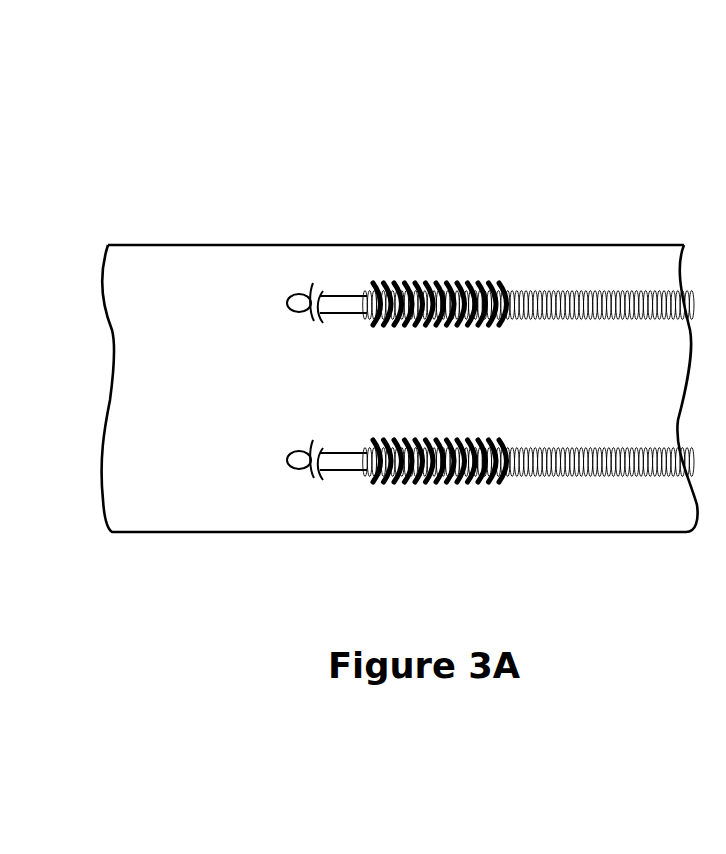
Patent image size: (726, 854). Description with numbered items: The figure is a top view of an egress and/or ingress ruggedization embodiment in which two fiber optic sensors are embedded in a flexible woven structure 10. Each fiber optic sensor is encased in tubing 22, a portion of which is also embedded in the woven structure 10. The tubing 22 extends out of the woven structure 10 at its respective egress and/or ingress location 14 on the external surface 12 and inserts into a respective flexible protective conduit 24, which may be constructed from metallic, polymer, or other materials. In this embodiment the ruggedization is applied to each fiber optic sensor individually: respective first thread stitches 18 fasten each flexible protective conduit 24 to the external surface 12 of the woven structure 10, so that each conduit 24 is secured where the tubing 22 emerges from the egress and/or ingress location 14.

The woven structure 10 is at (348, 401).
The external surface 12 is at (190, 243).
The egress and/or ingress location 14 is at (207, 553).
The first thread stitches 18 is at (431, 435).
The tubing 22 is at (318, 568).
The flexible protective conduit 24 is at (640, 575).